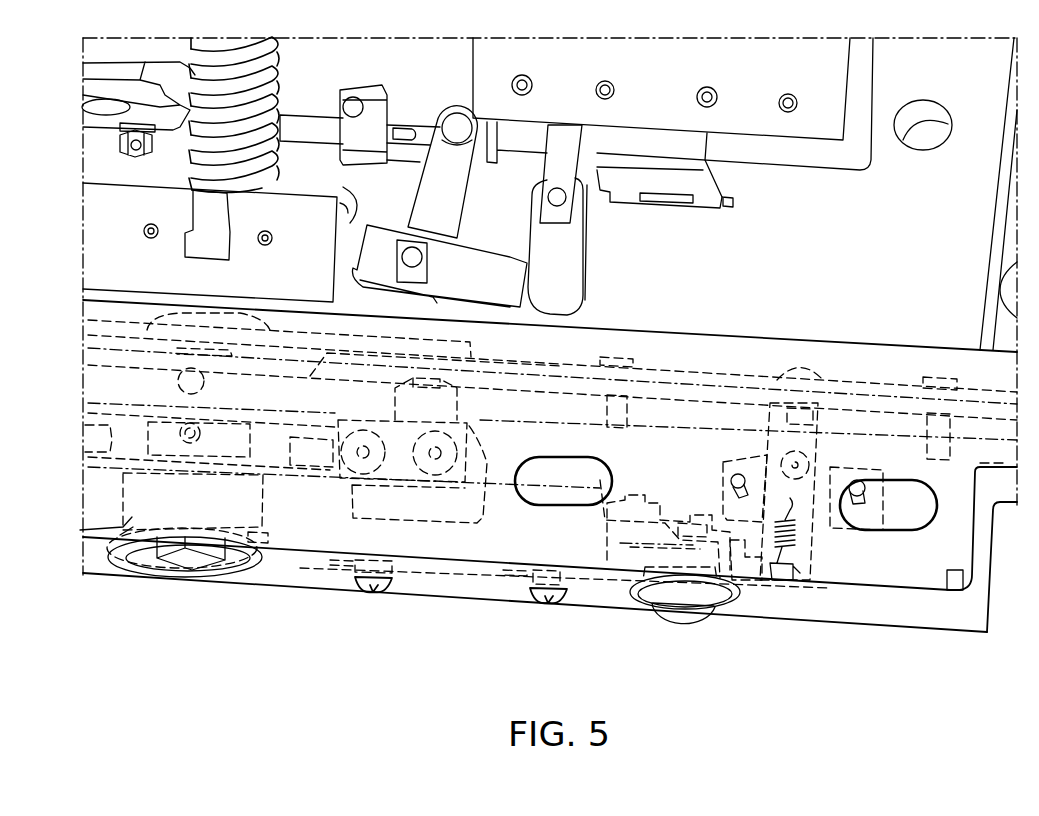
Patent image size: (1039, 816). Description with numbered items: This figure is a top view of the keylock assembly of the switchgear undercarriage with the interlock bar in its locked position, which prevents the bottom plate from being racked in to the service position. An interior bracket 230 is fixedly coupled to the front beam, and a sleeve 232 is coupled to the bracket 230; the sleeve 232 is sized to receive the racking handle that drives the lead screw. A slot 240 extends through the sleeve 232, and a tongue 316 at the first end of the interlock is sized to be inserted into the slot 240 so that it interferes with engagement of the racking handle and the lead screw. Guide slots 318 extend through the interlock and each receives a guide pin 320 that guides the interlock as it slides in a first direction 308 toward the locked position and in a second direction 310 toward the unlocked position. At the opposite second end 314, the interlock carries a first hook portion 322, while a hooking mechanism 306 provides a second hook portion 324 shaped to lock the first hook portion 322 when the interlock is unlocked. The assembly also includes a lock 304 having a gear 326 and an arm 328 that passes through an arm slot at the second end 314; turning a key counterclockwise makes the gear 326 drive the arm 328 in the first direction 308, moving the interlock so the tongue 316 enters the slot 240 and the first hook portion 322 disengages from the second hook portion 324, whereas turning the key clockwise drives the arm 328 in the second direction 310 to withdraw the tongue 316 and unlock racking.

The interior bracket 230 is at (401, 462).
The sleeve 232 is at (125, 518).
The slot 240 is at (255, 524).
The lock 304 is at (682, 610).
The hooking mechanism 306 is at (805, 370).
The first direction 308 is at (833, 708).
The second direction 310 is at (863, 712).
The second end 314 is at (691, 502).
The tongue 316 is at (250, 577).
The guide slots 318 is at (348, 565).
The guide pin 320 is at (538, 598).
The first hook portion 322 is at (733, 520).
The second hook portion 324 is at (750, 566).
The gear 326 is at (630, 550).
The arm 328 is at (640, 517).